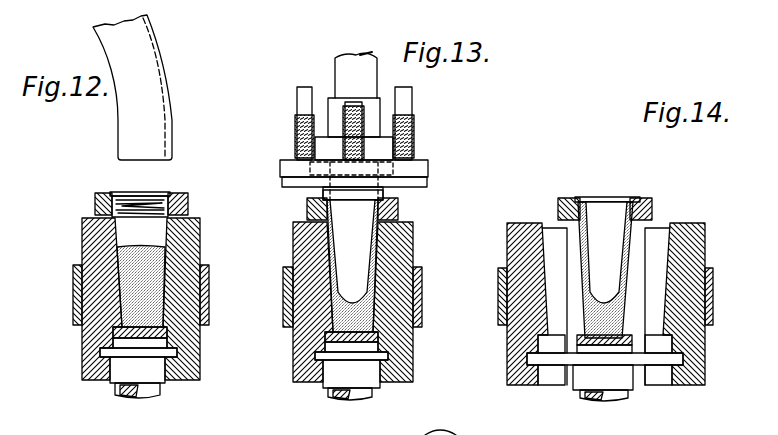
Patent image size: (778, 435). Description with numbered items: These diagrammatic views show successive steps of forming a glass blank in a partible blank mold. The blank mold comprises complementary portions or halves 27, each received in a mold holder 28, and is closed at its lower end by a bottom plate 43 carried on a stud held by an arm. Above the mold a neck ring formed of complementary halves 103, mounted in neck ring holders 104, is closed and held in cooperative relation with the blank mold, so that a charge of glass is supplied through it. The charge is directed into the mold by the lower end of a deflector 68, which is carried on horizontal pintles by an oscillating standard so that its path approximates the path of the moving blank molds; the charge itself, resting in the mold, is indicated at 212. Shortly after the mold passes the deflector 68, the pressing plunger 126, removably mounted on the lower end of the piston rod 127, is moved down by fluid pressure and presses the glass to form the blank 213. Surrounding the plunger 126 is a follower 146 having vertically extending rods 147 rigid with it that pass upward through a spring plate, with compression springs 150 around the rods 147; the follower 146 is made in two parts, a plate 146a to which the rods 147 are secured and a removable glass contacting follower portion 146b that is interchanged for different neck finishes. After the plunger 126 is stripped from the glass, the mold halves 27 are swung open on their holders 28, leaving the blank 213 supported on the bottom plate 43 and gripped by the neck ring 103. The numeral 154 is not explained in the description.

In FIG. 12, the blank mold portions or halves 27 is at (82, 234).
In FIG. 13, the blank mold portions or halves 27 is at (293, 229).
In FIG. 14, the blank mold portions or halves 27 is at (507, 238).
In FIG. 12, the mold holder 28 is at (73, 310).
In FIG. 13, the mold holder 28 is at (283, 285).
In FIG. 14, the mold holder 28 is at (502, 322).
In FIG. 12, the bottom plate 43 is at (100, 380).
In FIG. 13, the bottom plate 43 is at (382, 363).
In FIG. 14, the bottom plate 43 is at (633, 362).
In FIG. 12, the deflector 68 is at (152, 91).
In FIG. 12, the neck ring portions or halves 103 is at (167, 194).
In FIG. 13, the neck ring portions or halves 103 is at (308, 204).
In FIG. 14, the neck ring portions or halves 103 is at (630, 200).
In FIG. 12, the neck ring holders 104 is at (95, 195).
In FIG. 13, the neck ring holders 104 is at (398, 206).
In FIG. 14, the neck ring holders 104 is at (560, 198).
In FIG. 13, the pressing plunger 126 is at (343, 262).
In FIG. 13, the piston rod 127 is at (340, 68).
In FIG. 13, the follower 146 is at (427, 161).
In FIG. 13, the plate 146a is at (428, 185).
In FIG. 13, the glass contacting follower portion 146b is at (320, 182).
In FIG. 13, the vertically extending rods 147 is at (302, 98).
In FIG. 13, the compression springs 150 is at (297, 119).
In FIG. 14, the fragment 154 is at (465, 427).
In FIG. 12, the charge 212 is at (130, 280).
In FIG. 13, the blank 213 is at (338, 323).
In FIG. 14, the blank 213 is at (628, 297).